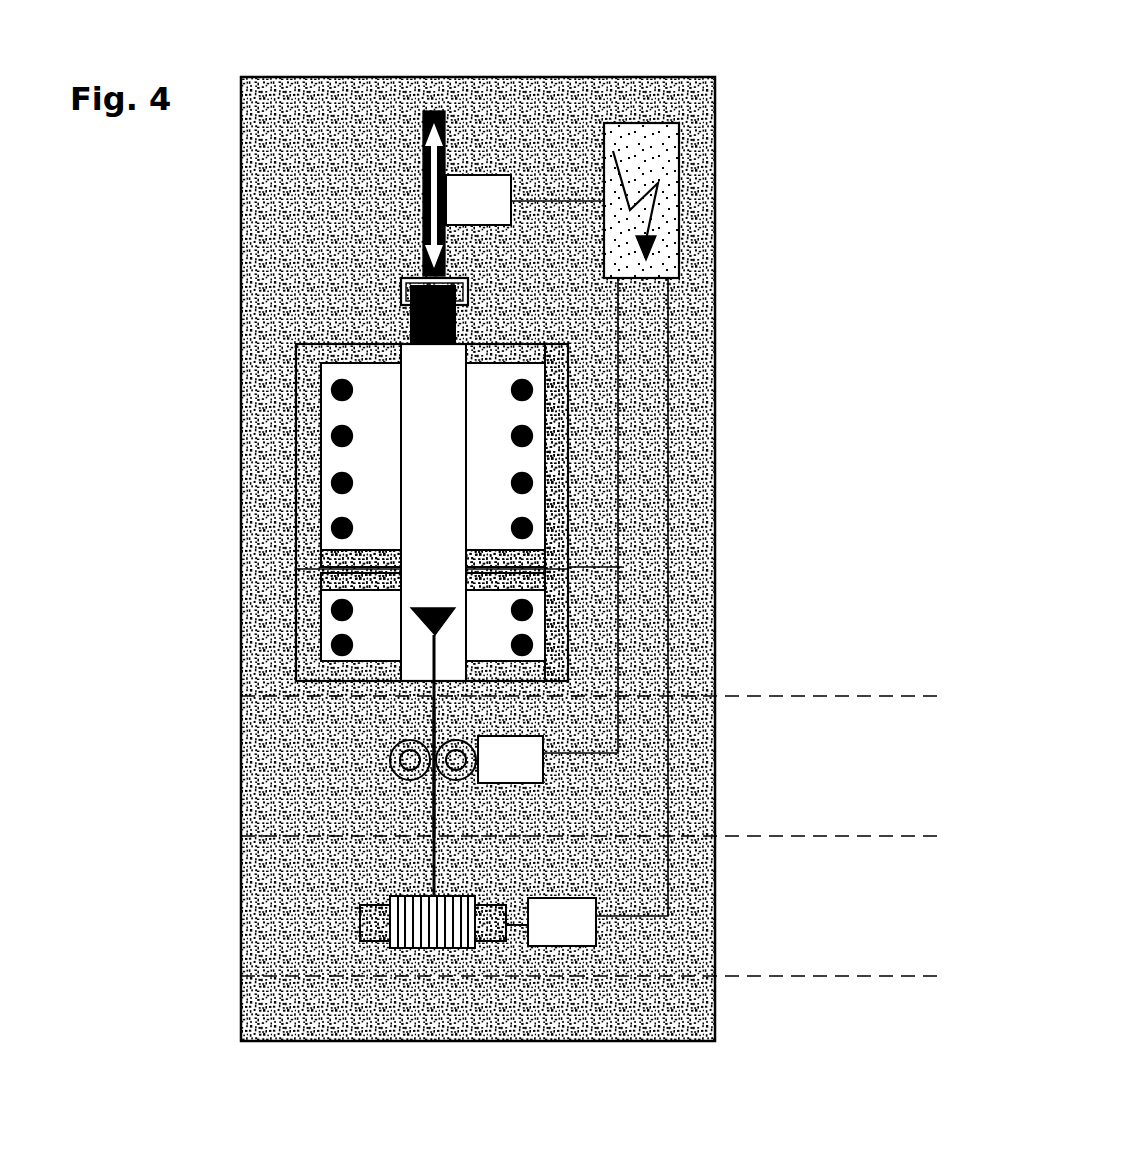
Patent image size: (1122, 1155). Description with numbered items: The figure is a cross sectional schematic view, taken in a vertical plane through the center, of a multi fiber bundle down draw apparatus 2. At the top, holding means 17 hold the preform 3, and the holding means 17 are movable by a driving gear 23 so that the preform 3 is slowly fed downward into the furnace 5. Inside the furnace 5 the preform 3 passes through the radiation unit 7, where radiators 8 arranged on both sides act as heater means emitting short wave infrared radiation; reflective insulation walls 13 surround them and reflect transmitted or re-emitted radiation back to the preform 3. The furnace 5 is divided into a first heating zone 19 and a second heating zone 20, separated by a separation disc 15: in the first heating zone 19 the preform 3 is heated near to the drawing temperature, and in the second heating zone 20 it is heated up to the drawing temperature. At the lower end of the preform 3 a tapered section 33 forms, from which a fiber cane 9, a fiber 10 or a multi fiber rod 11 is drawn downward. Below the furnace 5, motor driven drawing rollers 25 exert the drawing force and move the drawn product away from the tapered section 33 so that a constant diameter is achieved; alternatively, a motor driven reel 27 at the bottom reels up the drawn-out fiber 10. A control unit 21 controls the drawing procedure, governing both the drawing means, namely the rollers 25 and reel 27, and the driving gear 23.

The apparatus 2 is at (179, 292).
The preform 3 is at (458, 315).
The furnace 5 is at (572, 385).
The radiation unit 7 is at (392, 404).
The radiators 8 is at (533, 429).
The fiber cane 9 is at (440, 706).
The fiber 10 is at (442, 865).
The multi fiber rod 11 is at (637, 773).
The reflective insulation walls 13 is at (368, 512).
The separation disc 15 is at (612, 559).
The holding means 17 is at (468, 280).
The first heating zone 19 is at (367, 482).
The second heating zone 20 is at (360, 603).
The control unit 21 is at (680, 196).
The driving gear 23 is at (448, 110).
The drawing rollers 25 is at (329, 746).
The reel 27 is at (417, 613).
The tapered section 33 is at (303, 637).